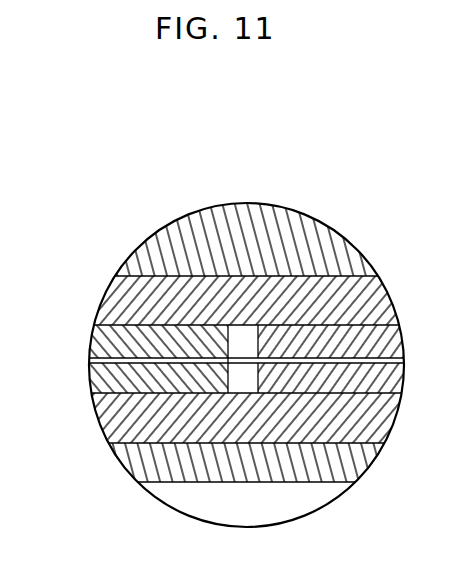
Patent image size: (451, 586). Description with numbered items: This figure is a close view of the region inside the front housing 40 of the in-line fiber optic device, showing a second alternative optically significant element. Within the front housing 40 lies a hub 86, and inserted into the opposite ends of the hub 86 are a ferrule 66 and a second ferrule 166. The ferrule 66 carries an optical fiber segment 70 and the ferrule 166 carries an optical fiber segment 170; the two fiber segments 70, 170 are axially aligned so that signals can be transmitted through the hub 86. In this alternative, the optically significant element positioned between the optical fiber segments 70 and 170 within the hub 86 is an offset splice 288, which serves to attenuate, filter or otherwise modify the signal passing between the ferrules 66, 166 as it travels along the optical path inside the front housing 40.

The front housing 40 is at (167, 245).
The hub 86 is at (118, 298).
The optical fiber segment 70 is at (92, 350).
The ferrule 66 is at (108, 374).
The optical fiber segment 170 is at (365, 355).
The ferrule 166 is at (372, 380).
The offset splice 288 is at (243, 360).